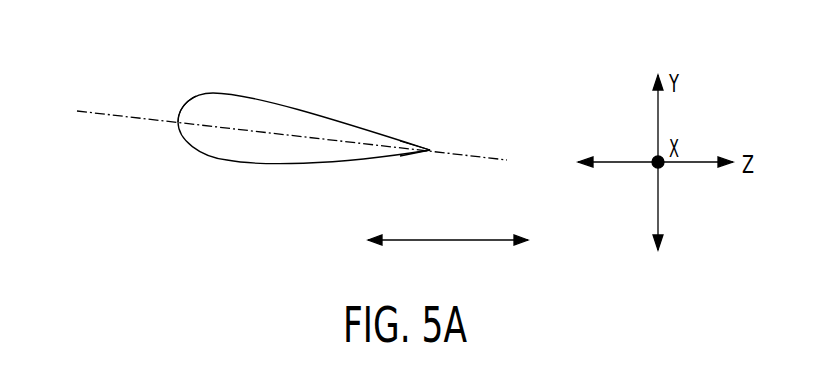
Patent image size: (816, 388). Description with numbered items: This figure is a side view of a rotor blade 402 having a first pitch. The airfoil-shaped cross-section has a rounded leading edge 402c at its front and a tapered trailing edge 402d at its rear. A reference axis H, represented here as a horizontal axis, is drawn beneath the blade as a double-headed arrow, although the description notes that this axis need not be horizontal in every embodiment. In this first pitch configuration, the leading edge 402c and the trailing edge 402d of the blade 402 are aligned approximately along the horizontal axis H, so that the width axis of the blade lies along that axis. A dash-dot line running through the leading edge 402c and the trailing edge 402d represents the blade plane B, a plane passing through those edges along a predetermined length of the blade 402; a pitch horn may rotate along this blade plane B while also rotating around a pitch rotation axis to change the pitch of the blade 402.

The rotor blade 402 is at (287, 91).
The leading edge 402c is at (173, 112).
The trailing edge 402d is at (437, 147).
The blade plane B is at (90, 110).
The horizontal axis H is at (453, 238).